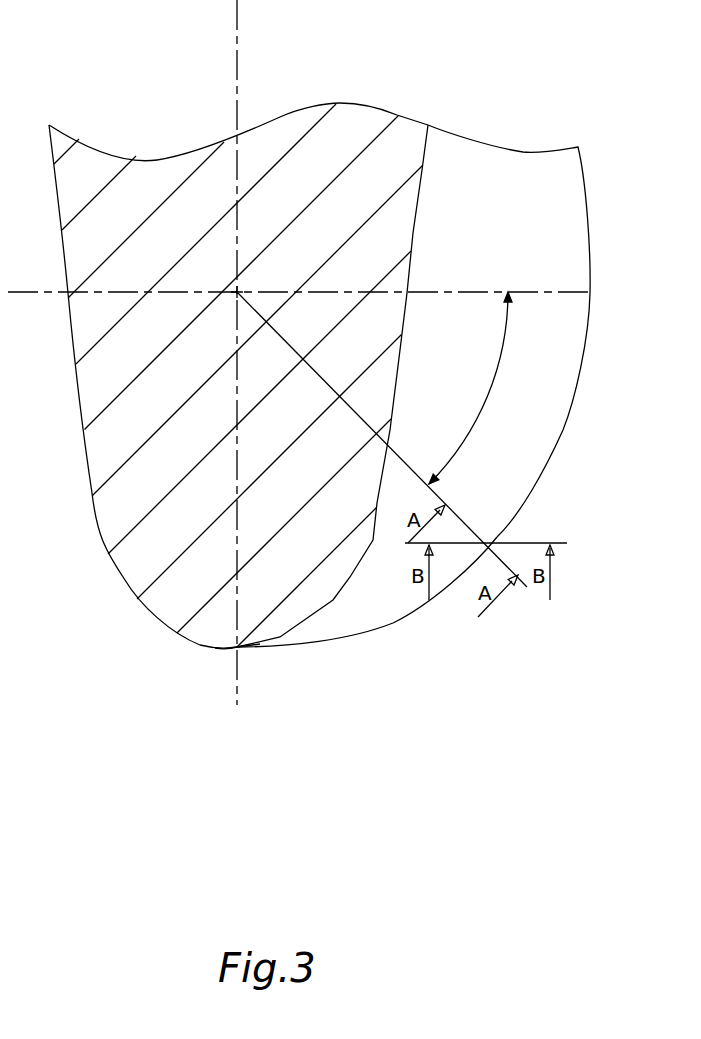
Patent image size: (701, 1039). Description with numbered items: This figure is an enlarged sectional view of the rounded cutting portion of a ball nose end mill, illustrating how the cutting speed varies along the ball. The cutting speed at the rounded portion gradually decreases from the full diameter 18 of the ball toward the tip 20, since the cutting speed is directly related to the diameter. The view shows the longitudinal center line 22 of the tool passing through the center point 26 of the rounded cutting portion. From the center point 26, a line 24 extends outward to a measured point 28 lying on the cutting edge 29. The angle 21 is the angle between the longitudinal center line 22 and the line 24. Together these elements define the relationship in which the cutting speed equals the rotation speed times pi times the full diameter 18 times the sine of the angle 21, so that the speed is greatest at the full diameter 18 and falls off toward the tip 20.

The full diameter 18 is at (590, 293).
The tip 20 is at (237, 647).
The angle θ 21 is at (465, 440).
The longitudinal center line 22 is at (237, 83).
The line 24 is at (310, 367).
The center point 26 is at (238, 290).
The measured point 28 is at (488, 541).
The cutting edge 29 is at (380, 618).